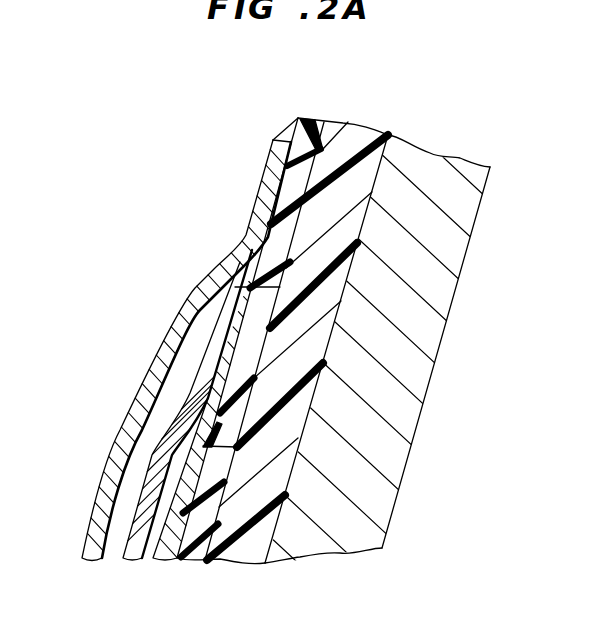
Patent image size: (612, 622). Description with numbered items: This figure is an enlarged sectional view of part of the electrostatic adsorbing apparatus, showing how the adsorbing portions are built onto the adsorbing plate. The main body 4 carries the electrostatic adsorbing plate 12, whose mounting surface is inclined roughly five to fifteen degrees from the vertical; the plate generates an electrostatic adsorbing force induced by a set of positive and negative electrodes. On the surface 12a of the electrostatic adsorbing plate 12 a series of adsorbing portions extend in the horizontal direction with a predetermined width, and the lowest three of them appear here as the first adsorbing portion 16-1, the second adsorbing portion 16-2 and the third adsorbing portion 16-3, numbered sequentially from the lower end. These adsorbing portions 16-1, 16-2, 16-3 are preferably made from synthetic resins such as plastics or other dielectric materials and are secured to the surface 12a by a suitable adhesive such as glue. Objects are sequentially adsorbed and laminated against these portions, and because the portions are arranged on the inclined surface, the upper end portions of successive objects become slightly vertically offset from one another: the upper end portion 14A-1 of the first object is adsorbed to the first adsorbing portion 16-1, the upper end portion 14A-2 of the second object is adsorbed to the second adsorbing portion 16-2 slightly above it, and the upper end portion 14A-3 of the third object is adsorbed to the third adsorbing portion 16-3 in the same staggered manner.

The main body 4 is at (353, 534).
The electrostatic adsorbing plate 12 is at (356, 150).
The surface of the electrostatic adsorbing plate 12a is at (318, 142).
The upper end portion of the first object 14A-1 is at (170, 500).
The upper end portion of the second object 14A-2 is at (218, 350).
The upper end portion of the third object 14A-3 is at (263, 190).
The first adsorbing portion 16-1 is at (213, 470).
The second adsorbing portion 16-2 is at (247, 360).
The third adsorbing portion 16-3 is at (300, 224).